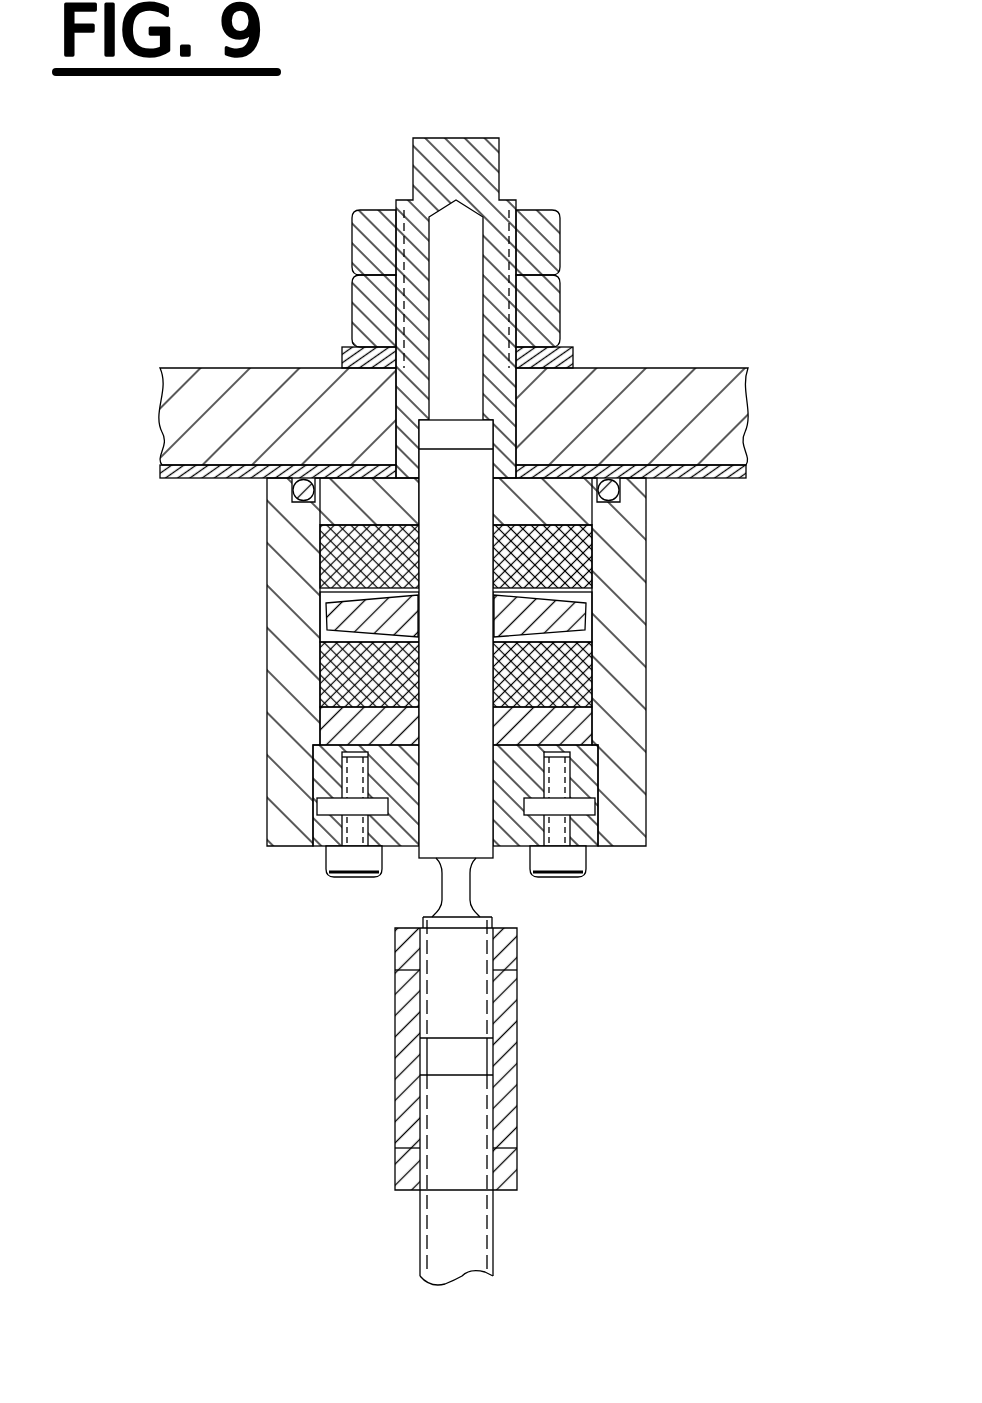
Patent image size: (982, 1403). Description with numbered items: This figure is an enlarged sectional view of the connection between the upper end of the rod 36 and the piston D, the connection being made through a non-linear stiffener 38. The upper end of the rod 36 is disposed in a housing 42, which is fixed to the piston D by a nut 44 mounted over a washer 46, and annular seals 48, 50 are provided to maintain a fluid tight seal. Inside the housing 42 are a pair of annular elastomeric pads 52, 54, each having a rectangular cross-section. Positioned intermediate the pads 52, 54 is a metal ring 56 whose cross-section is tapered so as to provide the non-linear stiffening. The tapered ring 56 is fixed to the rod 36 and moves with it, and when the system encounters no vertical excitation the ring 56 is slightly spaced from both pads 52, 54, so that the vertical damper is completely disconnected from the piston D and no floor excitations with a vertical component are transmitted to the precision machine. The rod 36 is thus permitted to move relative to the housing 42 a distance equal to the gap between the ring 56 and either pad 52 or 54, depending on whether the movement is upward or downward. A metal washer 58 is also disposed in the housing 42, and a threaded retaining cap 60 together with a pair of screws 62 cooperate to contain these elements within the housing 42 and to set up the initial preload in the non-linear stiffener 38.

The piston D is at (203, 352).
The rod 36 is at (420, 1236).
The non-linear stiffener 38 is at (230, 805).
The housing 42 is at (266, 605).
The nut 44 is at (592, 244).
The washer 46 is at (575, 357).
The annular seal 48 is at (290, 493).
The annular seal 50 is at (645, 523).
The annular elastomeric pad 52 is at (565, 562).
The annular elastomeric pad 54 is at (575, 670).
The metal ring 56 is at (575, 613).
The metal washer 58 is at (565, 720).
The threaded retaining cap 60 is at (513, 835).
The screws 62 is at (342, 878).